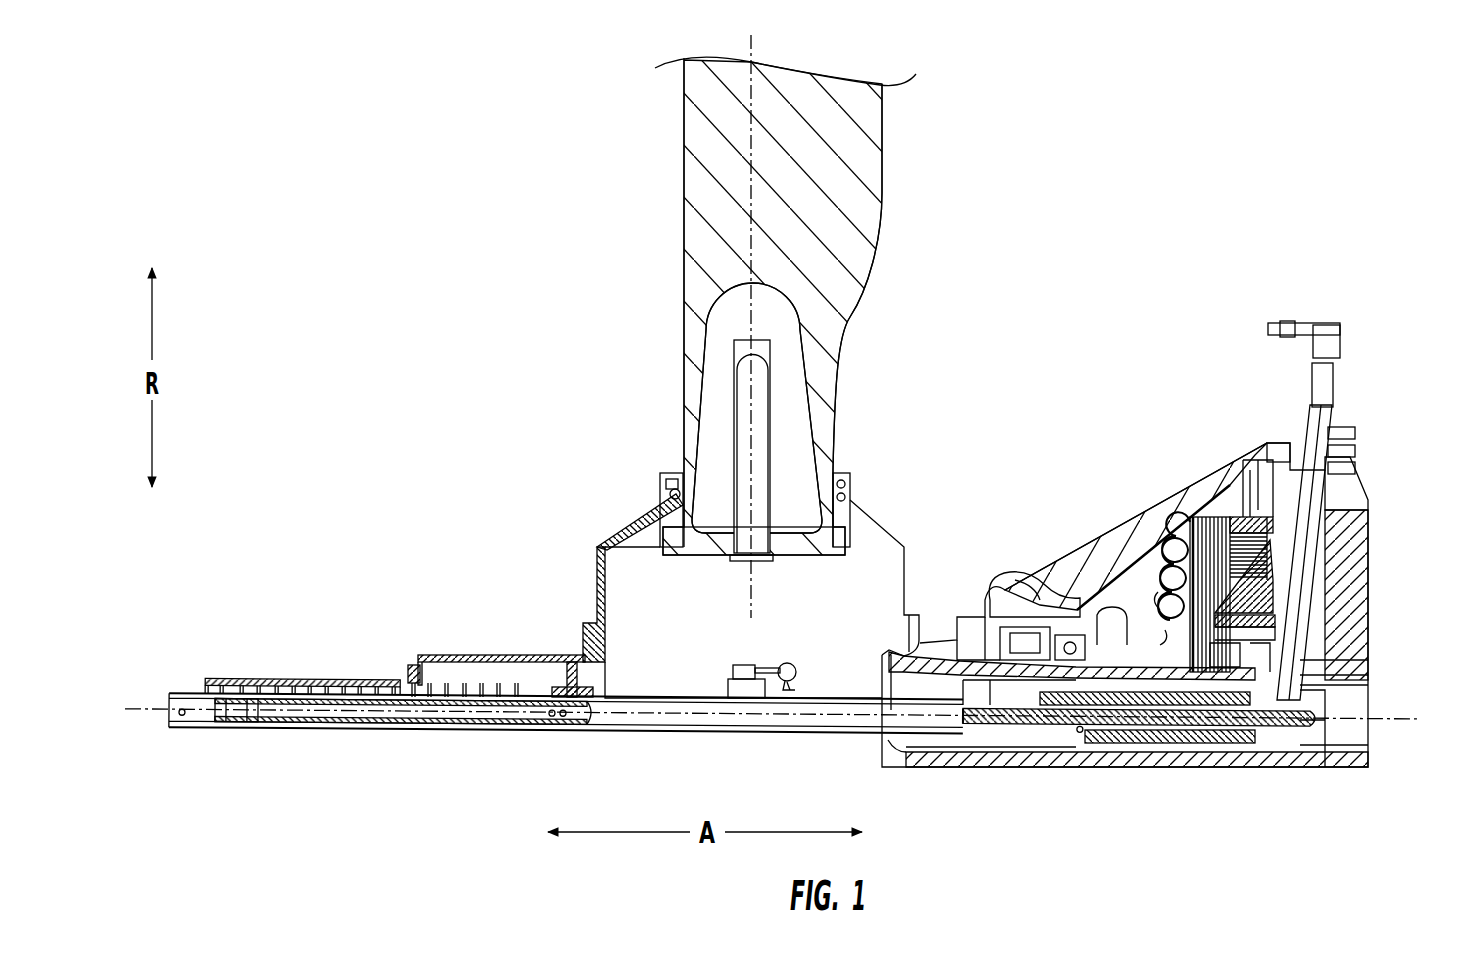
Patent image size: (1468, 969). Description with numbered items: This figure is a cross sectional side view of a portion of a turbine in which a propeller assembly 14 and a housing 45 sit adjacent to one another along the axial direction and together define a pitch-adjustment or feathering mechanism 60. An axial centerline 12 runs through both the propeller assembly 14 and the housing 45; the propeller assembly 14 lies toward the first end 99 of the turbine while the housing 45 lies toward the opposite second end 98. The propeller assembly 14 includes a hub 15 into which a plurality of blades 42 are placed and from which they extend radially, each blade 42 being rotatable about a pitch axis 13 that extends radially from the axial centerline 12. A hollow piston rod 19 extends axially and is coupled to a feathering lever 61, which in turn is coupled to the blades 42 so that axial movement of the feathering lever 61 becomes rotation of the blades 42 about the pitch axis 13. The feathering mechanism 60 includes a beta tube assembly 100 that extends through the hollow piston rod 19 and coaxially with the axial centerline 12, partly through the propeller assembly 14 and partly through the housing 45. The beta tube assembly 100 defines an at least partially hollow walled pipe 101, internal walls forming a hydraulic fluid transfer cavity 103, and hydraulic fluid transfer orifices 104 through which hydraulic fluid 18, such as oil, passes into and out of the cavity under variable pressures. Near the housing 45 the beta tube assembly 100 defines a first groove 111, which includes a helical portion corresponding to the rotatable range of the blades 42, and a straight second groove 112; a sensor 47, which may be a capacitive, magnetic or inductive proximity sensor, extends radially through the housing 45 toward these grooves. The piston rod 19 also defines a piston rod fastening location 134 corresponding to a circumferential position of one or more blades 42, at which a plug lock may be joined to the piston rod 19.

The axial centerline 12 is at (135, 708).
The pitch axis 13 is at (752, 52).
The propeller assembly 14 is at (590, 460).
The hub 15 is at (605, 540).
The hydraulic fluid 18 is at (546, 688).
The hollow piston rod 19 is at (690, 693).
The blade 42 is at (848, 207).
The housing 45 is at (1145, 442).
The sensor 47 is at (1315, 418).
The feathering mechanism 60 is at (840, 568).
The feathering lever 61 is at (772, 668).
The second end 98 is at (1414, 576).
The first end 99 is at (154, 611).
The beta tube assembly 100 is at (455, 716).
The hollow walled pipe 101 is at (338, 716).
The hydraulic fluid transfer cavity 103 is at (812, 720).
The hydraulic fluid transfer orifice 104 is at (553, 713).
The first groove 111 is at (1370, 668).
The second groove 112 is at (1368, 690).
The piston rod fastening location 134 is at (172, 713).